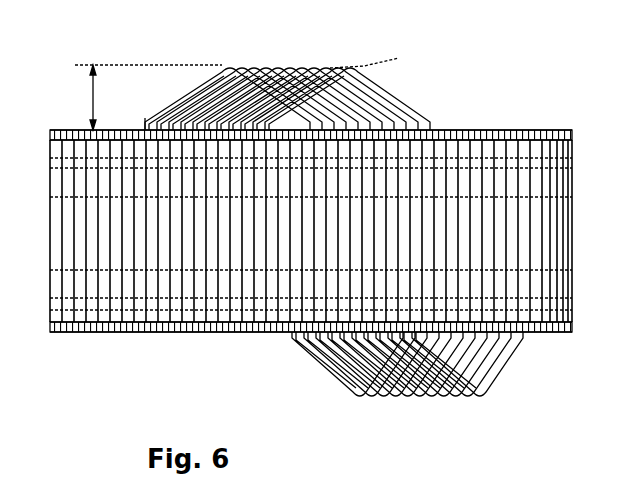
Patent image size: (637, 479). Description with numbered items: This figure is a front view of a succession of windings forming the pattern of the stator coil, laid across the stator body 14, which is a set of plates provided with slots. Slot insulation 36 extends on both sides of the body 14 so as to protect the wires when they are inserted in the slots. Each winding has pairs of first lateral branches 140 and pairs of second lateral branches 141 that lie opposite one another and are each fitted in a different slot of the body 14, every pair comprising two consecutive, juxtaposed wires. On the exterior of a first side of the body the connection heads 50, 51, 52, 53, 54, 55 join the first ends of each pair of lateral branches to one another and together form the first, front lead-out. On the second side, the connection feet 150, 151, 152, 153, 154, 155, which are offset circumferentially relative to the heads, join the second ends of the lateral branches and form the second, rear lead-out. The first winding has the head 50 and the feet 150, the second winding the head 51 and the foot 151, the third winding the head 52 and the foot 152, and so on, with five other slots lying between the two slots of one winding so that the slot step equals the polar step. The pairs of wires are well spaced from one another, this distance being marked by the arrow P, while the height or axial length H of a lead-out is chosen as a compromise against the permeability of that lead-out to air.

The body 14 is at (50, 290).
The slot insulation 36 is at (433, 128).
The connection head 50 is at (226, 66).
The connection head 51 is at (253, 64).
The connection head 52 is at (276, 64).
The connection head 53 is at (301, 64).
The connection head 54 is at (326, 66).
The connection head 55 is at (352, 68).
The distance between pairs of wires P is at (371, 59).
The height of the lead-out H is at (92, 100).
The first lateral branch 140 is at (144, 127).
The second lateral branch 141 is at (291, 336).
The connection foot 150 is at (326, 362).
The connection foot 151 is at (395, 399).
The connection foot 152 is at (418, 400).
The connection foot 153 is at (445, 400).
The connection foot 154 is at (470, 400).
The connection foot 155 is at (486, 397).